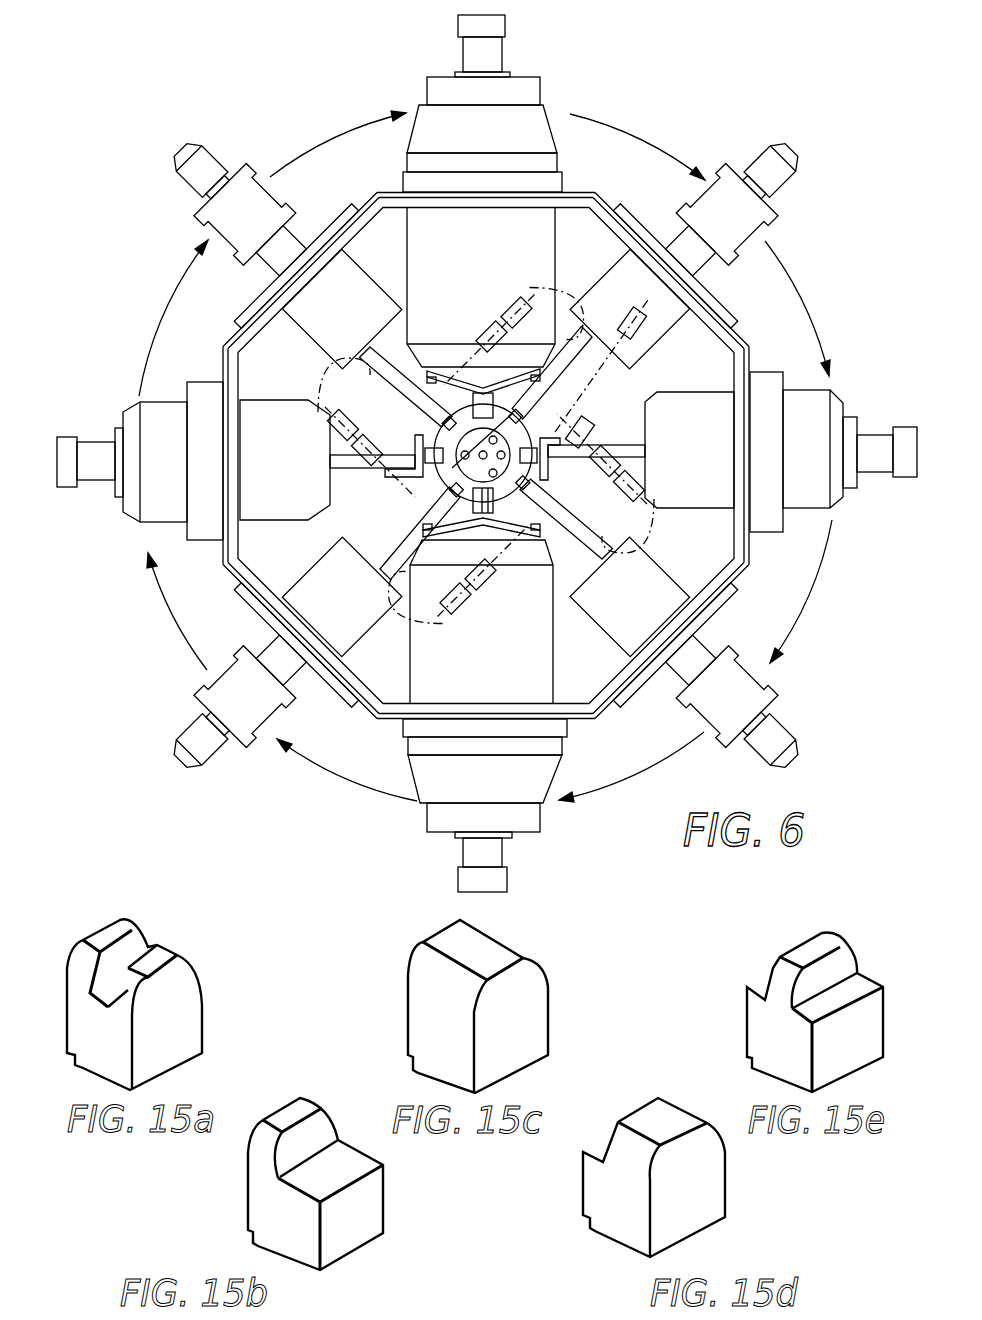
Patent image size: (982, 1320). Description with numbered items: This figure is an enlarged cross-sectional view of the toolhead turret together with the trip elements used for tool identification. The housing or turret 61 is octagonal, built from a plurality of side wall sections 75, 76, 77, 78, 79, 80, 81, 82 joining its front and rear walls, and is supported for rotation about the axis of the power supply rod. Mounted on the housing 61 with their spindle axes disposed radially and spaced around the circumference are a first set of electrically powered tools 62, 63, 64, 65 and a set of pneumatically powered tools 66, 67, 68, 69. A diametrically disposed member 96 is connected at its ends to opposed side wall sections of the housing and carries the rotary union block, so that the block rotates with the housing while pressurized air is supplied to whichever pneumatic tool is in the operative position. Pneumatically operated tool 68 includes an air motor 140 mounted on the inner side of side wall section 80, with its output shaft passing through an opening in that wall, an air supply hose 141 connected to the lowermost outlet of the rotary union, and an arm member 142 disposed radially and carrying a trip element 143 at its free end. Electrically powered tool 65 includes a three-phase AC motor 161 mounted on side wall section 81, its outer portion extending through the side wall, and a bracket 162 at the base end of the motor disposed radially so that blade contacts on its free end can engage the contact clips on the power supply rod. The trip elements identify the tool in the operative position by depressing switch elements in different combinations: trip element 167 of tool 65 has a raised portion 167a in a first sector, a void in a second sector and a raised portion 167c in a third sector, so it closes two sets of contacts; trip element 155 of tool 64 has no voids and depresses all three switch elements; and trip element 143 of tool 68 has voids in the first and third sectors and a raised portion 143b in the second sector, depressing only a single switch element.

In FIG. 6, the housing or turret 61 is at (595, 193).
In FIG. 6, the electrically powered tool 62 is at (546, 116).
In FIG. 6, the electrically powered tool 63 is at (841, 394).
In FIG. 6, the electrically powered tool 64 is at (543, 815).
In FIG. 6, the electrically powered tool 65 is at (139, 521).
In FIG. 6, the pneumatically powered tool 66 is at (772, 221).
In FIG. 6, the pneumatically powered tool 67 is at (778, 711).
In FIG. 6, the pneumatically powered tool 68 is at (206, 687).
In FIG. 6, the pneumatically powered tool 69 is at (205, 220).
In FIG. 6, the side wall section 75 is at (381, 191).
In FIG. 6, the side wall section 76 is at (742, 331).
In FIG. 6, the side wall section 77 is at (752, 545).
In FIG. 6, the side wall section 78 is at (598, 714).
In FIG. 6, the side wall section 79 is at (393, 720).
In FIG. 6, the side wall section 80 is at (237, 574).
In FIG. 6, the side wall section 81 is at (222, 360).
In FIG. 6, the side wall section 82 is at (227, 333).
In FIG. 6, the diametrically disposed member 96 is at (650, 305).
In FIG. 6, the air motor 140 is at (367, 635).
In FIG. 6, the air supply hose 141 is at (490, 575).
In FIG. 6, the arm member 142 is at (357, 533).
In FIG. 6, the AC motor 161 is at (289, 474).
In FIG. 6, the bracket 162 is at (345, 463).
In FIG. 15a, the trip element 167 is at (193, 1015).
In FIG. 15a, the raised portion 167a is at (80, 967).
In FIG. 15a, the raised portion 167c is at (125, 998).
In FIG. 15c, the trip element 155 is at (537, 1015).
In FIG. 15e, the trip element 143 is at (748, 1037).
In FIG. 15e, the raised portion 143b is at (773, 975).